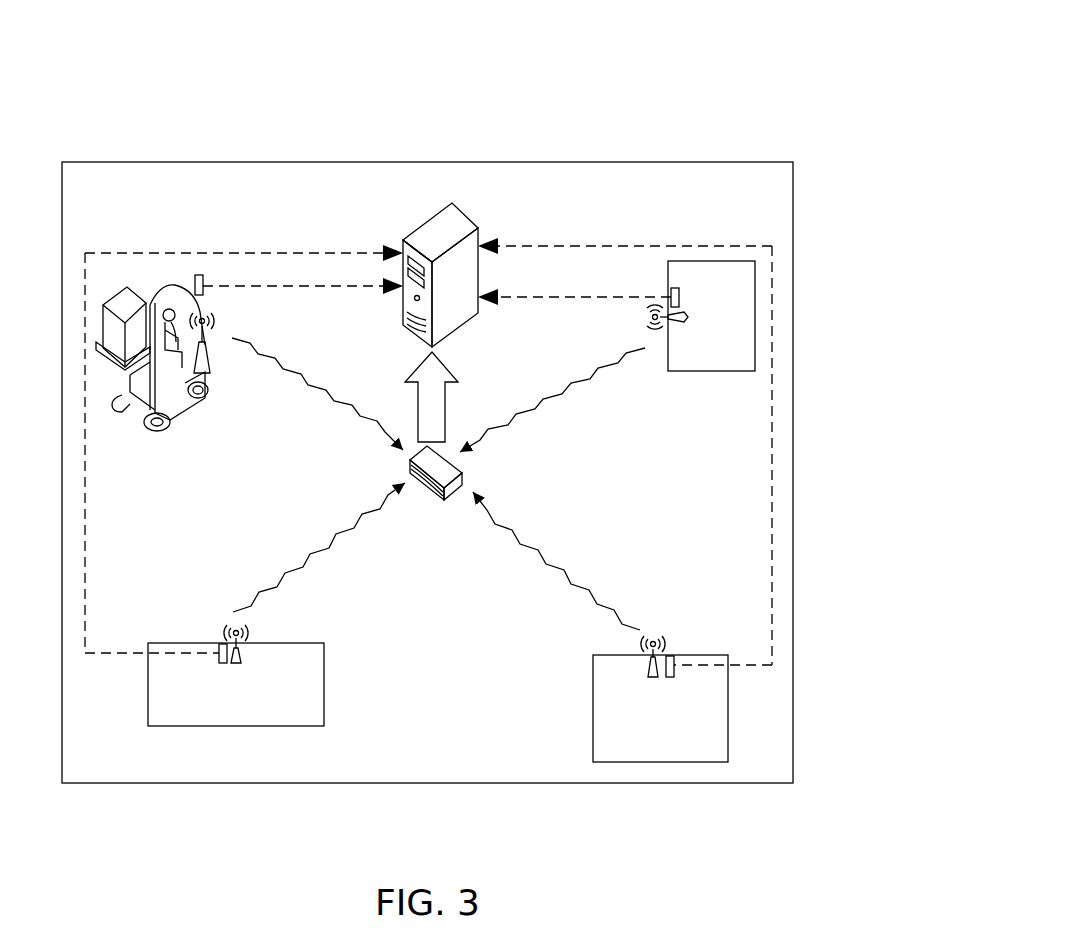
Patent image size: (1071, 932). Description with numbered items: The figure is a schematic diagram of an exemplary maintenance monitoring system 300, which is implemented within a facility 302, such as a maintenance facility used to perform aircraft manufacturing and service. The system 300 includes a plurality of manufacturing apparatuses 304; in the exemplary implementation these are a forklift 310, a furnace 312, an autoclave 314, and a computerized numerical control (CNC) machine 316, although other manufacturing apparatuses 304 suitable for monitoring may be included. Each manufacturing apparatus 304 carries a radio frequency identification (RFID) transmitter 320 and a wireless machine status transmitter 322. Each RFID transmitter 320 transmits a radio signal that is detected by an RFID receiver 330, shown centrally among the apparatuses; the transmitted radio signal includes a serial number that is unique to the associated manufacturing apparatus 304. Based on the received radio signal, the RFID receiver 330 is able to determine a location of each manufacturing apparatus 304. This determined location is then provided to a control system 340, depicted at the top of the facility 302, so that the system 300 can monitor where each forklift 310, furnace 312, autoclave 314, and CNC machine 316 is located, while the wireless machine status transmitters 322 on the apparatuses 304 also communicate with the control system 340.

The maintenance monitoring system 300 is at (629, 60).
The facility 302 is at (672, 162).
The manufacturing apparatus 304 is at (156, 430).
The forklift 310 is at (180, 398).
The furnace 312 is at (668, 360).
The autoclave 314 is at (305, 686).
The computerized numerical control (CNC) machine 316 is at (690, 655).
The radio frequency identification (RFID) transmitter 320 is at (210, 373).
The wireless machine status transmitter 322 is at (200, 275).
The RFID receiver 330 is at (446, 500).
The control system 340 is at (452, 226).